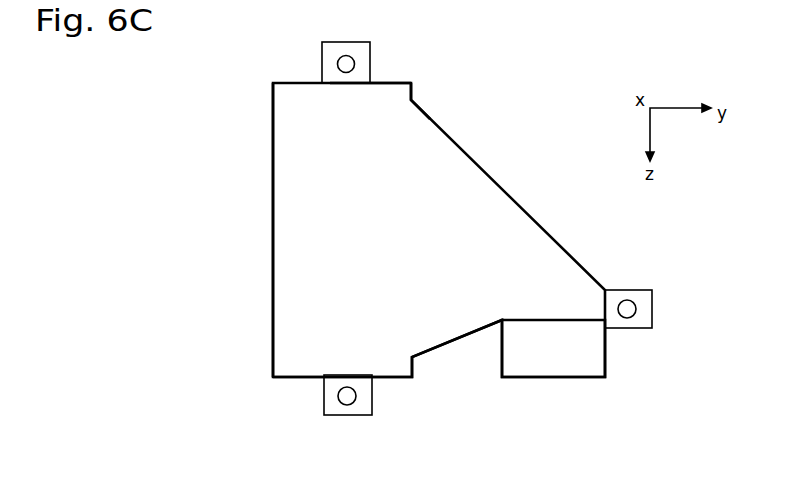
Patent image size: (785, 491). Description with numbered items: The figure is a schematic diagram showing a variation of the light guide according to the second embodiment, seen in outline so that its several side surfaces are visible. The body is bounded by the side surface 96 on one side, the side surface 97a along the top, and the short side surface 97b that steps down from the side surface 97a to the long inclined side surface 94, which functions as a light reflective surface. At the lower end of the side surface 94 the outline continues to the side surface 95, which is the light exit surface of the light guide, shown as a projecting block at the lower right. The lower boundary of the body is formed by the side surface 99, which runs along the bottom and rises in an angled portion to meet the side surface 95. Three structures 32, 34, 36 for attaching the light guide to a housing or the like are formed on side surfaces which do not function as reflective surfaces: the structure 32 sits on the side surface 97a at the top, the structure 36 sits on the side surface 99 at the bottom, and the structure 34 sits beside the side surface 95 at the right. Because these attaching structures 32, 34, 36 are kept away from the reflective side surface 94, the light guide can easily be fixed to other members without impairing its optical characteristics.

The structure 32 is at (323, 60).
The structure 34 is at (635, 292).
The structure 36 is at (357, 412).
The side surface 94 is at (527, 213).
The side surface 95 is at (563, 347).
The side surface 96 is at (275, 198).
The side surface 97a is at (383, 83).
The side surface 97b is at (413, 90).
The side surface 99 is at (288, 380).